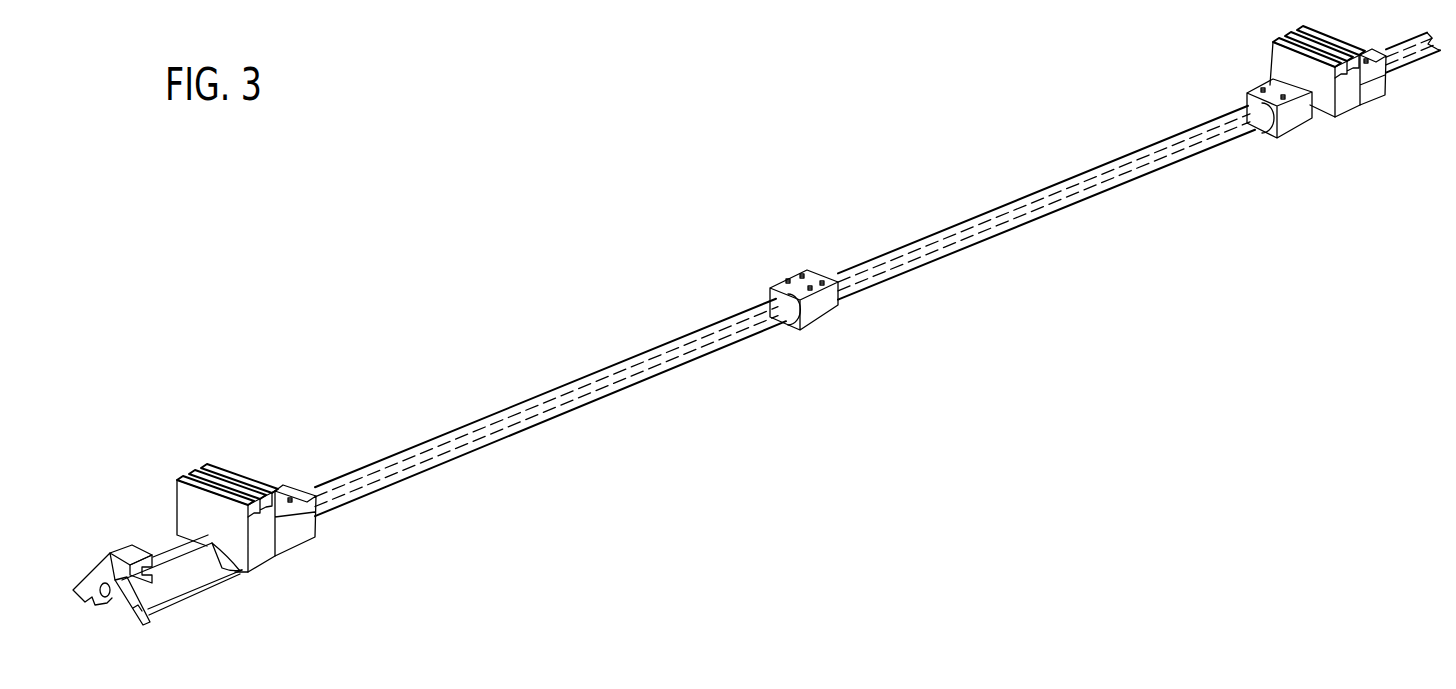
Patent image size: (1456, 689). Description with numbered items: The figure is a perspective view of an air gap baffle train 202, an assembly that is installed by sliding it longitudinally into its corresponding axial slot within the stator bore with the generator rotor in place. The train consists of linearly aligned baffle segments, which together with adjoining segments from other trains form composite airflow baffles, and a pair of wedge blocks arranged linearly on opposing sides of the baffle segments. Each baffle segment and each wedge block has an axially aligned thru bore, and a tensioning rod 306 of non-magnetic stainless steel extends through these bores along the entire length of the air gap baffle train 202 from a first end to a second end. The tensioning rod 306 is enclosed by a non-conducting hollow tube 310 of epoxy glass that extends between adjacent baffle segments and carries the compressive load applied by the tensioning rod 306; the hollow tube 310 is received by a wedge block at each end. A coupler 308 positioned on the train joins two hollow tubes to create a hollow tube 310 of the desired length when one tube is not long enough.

The air gap baffle train 202 is at (756, 312).
The tensioning rod 306 is at (530, 400).
The coupler 308 is at (820, 303).
The hollow tube 310 is at (1040, 187).